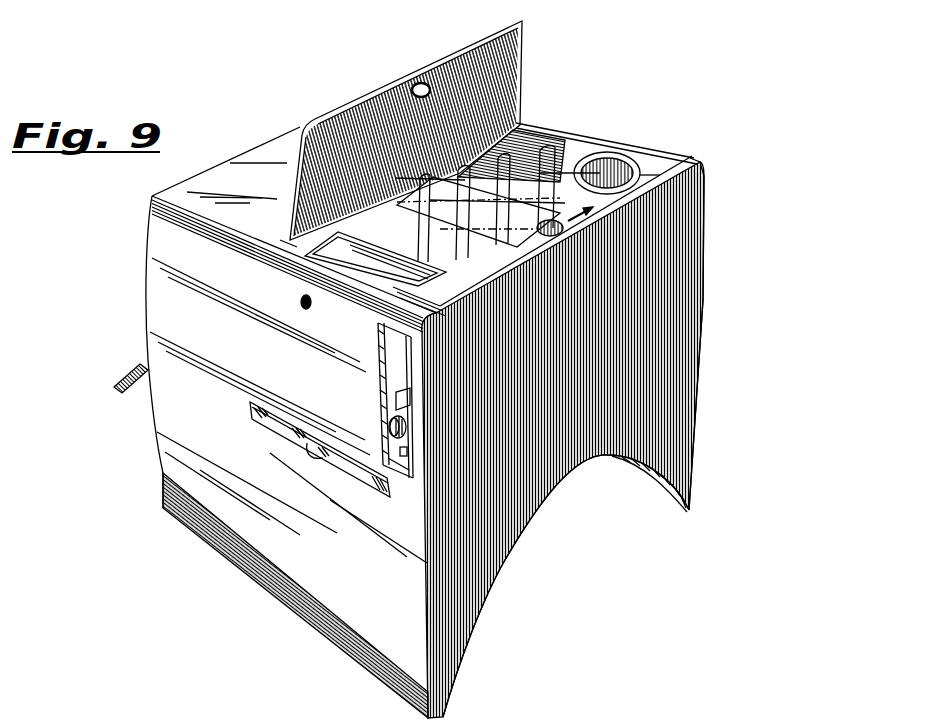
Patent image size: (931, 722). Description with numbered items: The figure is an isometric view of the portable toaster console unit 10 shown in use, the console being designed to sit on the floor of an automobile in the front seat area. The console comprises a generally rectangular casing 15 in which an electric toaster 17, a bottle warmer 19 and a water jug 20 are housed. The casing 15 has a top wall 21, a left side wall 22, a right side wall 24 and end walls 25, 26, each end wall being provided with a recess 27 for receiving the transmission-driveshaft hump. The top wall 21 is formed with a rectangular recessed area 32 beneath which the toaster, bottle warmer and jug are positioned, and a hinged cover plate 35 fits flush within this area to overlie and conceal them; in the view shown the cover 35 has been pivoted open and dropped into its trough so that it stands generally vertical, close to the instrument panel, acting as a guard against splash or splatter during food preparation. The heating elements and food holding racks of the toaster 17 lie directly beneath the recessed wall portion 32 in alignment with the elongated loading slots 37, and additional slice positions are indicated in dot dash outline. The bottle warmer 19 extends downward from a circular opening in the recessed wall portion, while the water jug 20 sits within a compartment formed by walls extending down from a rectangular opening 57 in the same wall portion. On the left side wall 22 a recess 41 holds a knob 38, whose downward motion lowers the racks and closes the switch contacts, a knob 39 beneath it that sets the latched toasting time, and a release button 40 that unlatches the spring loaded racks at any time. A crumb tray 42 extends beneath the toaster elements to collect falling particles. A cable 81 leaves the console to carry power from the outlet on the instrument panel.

The toaster console unit 10 is at (468, 195).
The casing 15 is at (142, 243).
The electric toaster 17 is at (358, 323).
The bottle warmer 19 is at (640, 132).
The water jug 20 is at (525, 173).
The top wall 21 is at (265, 170).
The left side wall 22 is at (173, 305).
The right side wall 24 is at (704, 293).
The end wall 25 is at (145, 286).
The end wall 26 is at (627, 358).
The recess 27 is at (527, 511).
The rectangular recessed area 32 is at (176, 721).
The hinged cover plate 35 is at (363, 97).
The loading slots 37 is at (339, 168).
The knob 38 is at (395, 412).
The knob 39 is at (402, 440).
The release button 40 is at (404, 458).
The recess 41 is at (386, 367).
The crumb tray 42 is at (287, 438).
The rectangular opening 57 is at (565, 147).
The cable 81 is at (120, 387).